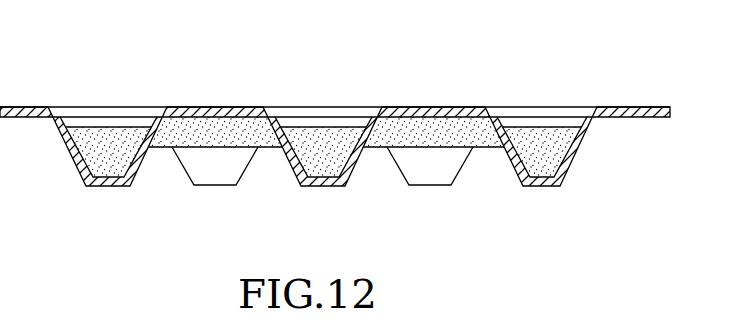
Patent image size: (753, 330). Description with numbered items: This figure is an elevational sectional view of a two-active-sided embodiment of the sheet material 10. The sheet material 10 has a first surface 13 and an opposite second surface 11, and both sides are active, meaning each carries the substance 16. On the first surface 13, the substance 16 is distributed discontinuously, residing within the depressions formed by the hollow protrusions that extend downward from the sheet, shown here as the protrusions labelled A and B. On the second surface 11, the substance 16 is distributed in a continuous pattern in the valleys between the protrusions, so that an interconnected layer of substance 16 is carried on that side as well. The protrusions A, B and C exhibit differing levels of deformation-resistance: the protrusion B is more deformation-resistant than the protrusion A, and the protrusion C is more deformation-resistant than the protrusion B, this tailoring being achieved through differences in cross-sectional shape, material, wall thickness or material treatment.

The sheet material 10 is at (360, 153).
The second surface 11 is at (633, 118).
The first surface 13 is at (597, 118).
The substance 16 is at (327, 137).
The protrusion A is at (86, 184).
The protrusion B is at (325, 187).
The protrusion C is at (250, 174).